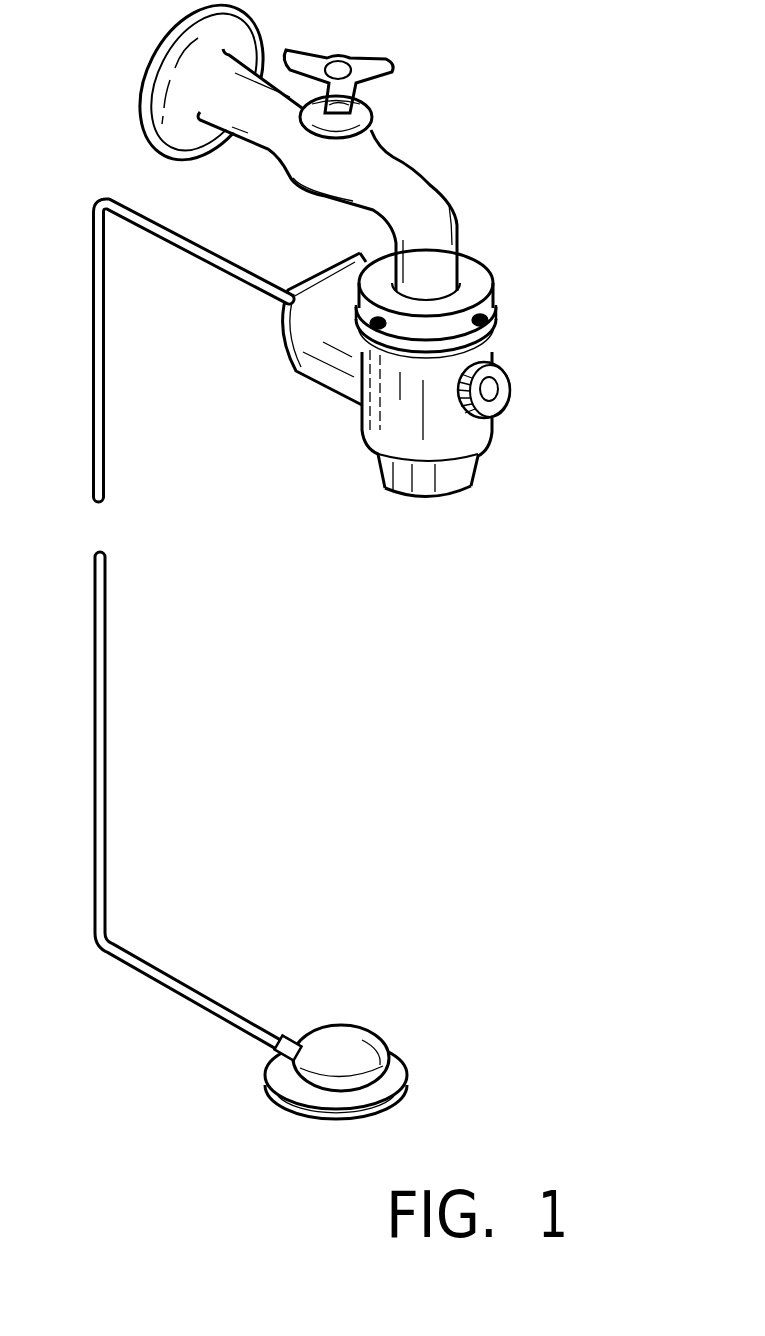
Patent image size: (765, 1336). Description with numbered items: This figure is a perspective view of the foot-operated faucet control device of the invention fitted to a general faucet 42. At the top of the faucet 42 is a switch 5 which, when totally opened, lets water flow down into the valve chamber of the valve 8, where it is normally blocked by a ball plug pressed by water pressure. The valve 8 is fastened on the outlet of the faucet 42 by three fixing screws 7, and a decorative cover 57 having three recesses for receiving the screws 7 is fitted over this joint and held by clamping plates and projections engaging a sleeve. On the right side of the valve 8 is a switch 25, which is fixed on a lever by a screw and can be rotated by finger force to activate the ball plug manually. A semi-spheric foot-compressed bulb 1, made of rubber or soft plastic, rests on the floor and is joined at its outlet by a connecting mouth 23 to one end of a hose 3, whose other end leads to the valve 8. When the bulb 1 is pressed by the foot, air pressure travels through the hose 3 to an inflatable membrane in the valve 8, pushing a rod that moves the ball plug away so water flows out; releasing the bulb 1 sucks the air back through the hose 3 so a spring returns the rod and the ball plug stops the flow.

The foot-compressed bulb 1 is at (350, 1055).
The hose 3 is at (148, 970).
The switch 5 is at (383, 62).
The fixing screws 7 is at (497, 318).
The valve 8 is at (487, 350).
The connecting mouth 23 is at (277, 1047).
The switch 25 is at (503, 383).
The faucet 42 is at (318, 173).
The decorative cover 57 is at (482, 283).